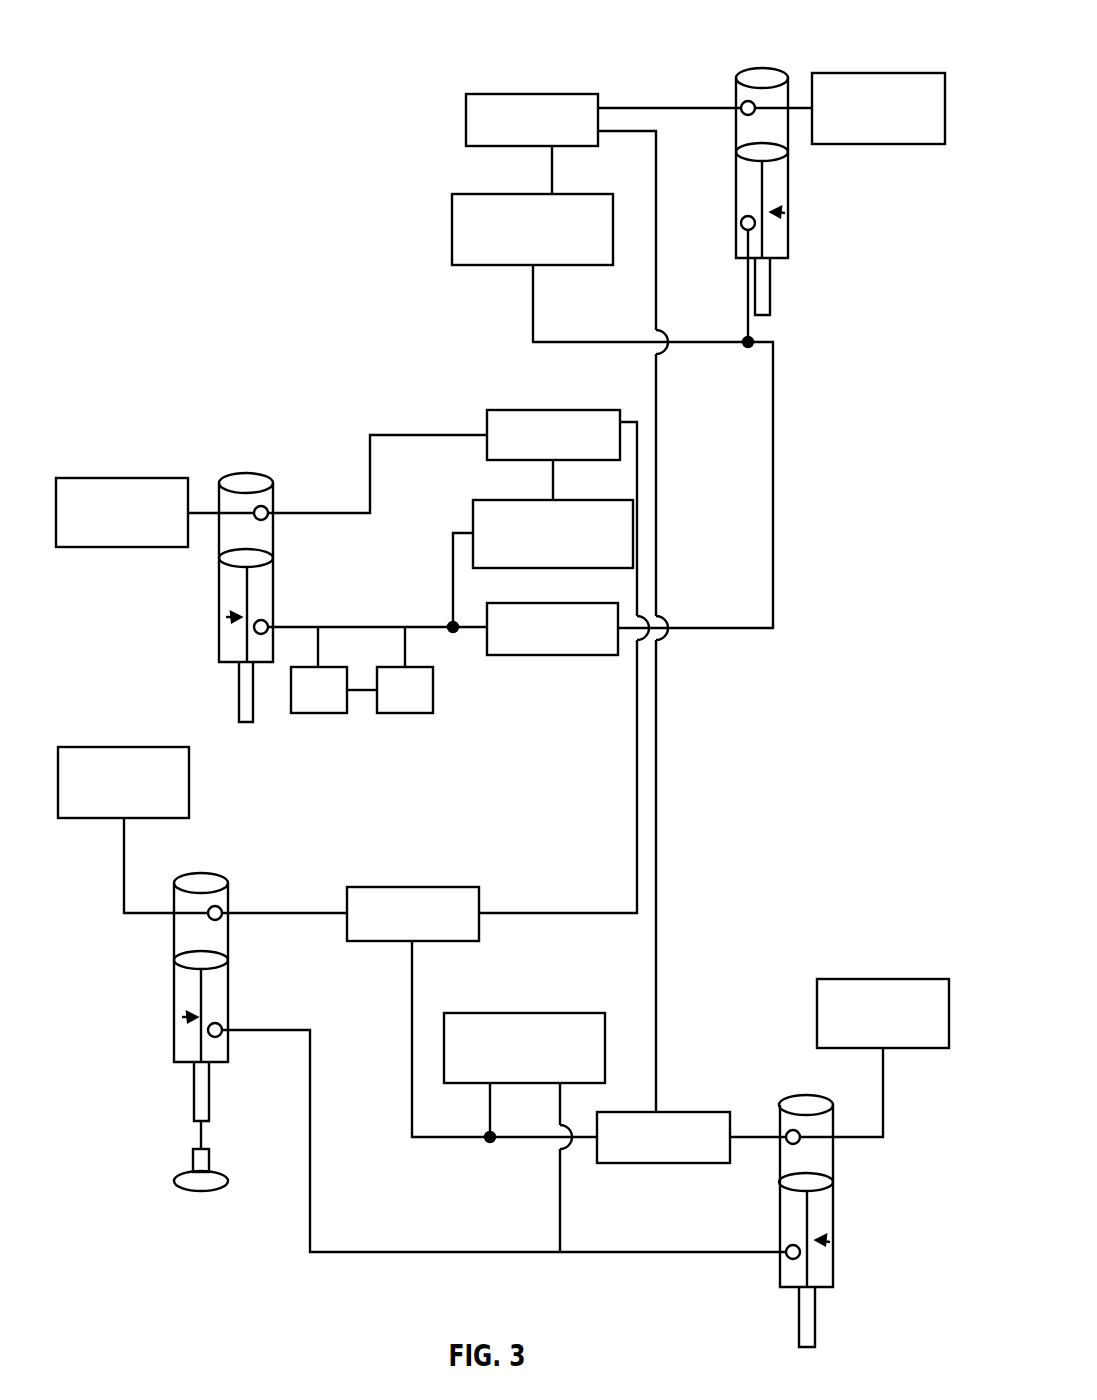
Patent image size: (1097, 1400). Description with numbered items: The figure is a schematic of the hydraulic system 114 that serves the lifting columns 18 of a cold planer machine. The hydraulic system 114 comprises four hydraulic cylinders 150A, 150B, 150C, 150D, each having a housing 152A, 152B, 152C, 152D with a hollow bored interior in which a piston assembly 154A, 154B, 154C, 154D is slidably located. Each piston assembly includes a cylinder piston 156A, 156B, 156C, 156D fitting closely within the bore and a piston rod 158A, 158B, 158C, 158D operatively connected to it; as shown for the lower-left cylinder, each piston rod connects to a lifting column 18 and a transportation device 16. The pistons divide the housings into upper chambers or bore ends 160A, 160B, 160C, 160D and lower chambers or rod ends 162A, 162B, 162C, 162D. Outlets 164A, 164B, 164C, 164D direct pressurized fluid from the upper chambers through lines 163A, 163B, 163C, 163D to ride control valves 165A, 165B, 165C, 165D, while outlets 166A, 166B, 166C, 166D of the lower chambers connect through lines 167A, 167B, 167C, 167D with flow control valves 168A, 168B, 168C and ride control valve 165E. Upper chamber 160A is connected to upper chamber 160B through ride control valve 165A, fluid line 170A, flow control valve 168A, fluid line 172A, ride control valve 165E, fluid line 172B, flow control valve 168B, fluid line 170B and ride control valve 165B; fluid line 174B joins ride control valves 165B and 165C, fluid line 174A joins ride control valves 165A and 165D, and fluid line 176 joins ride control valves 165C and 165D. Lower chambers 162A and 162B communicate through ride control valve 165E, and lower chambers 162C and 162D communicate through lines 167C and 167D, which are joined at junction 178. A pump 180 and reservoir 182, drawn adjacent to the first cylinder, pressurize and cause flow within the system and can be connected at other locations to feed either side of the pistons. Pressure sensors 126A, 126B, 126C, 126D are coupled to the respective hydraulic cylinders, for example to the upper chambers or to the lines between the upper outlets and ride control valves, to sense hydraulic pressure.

The hydraulic system 114 is at (868, 20).
The transportation device 16 is at (215, 1173).
The lifting column 18 is at (193, 1160).
The pressure sensor 126A is at (135, 477).
The pressure sensor 126B is at (848, 73).
The pressure sensor 126C is at (857, 978).
The pressure sensor 126D is at (133, 747).
The hydraulic cylinder 150A is at (246, 454).
The hydraulic cylinder 150B is at (754, 55).
The hydraulic cylinder 150C is at (789, 1070).
The hydraulic cylinder 150D is at (221, 840).
The housing 152A is at (218, 495).
The housing 152B is at (790, 82).
The housing 152C is at (833, 1112).
The housing 152D is at (174, 887).
The piston assembly 154A is at (226, 617).
The piston assembly 154B is at (785, 214).
The piston assembly 154C is at (830, 1242).
The piston assembly 154D is at (182, 1017).
The cylinder piston 156A is at (230, 567).
The cylinder piston 156B is at (778, 163).
The cylinder piston 156C is at (825, 1193).
The cylinder piston 156D is at (183, 971).
The piston rod 158A is at (238, 680).
The piston rod 158B is at (773, 277).
The piston rod 158C is at (817, 1307).
The piston rod 158D is at (191, 1084).
The upper chamber 160A is at (225, 543).
The upper chamber 160B is at (785, 138).
The upper chamber 160C is at (827, 1167).
The upper chamber 160D is at (181, 945).
The lower chamber 162A is at (253, 590).
The lower chamber 162B is at (755, 197).
The lower chamber 162C is at (800, 1238).
The lower chamber 162D is at (211, 1015).
The line 163A is at (445, 432).
The line 163B is at (627, 107).
The line 163C is at (732, 1140).
The line 163D is at (315, 919).
The outlet 164A is at (267, 507).
The outlet 164B is at (741, 101).
The outlet 164C is at (788, 1131).
The outlet 164D is at (222, 907).
The ride control valve 165A is at (585, 409).
The ride control valve 165B is at (547, 93).
The ride control valve 165C is at (627, 1164).
The ride control valve 165D is at (427, 886).
The ride control valve 165E is at (570, 656).
The outlet 166A is at (270, 618).
The outlet 166B is at (741, 230).
The outlet 166C is at (788, 1258).
The outlet 166D is at (213, 1034).
The line 167A is at (355, 626).
The line 167B is at (745, 287).
The line 167C is at (653, 1253).
The line 167D is at (353, 1253).
The flow control valve 168A is at (543, 499).
The flow control valve 168B is at (537, 193).
The flow control valve 168C is at (527, 1012).
The fluid line 170A is at (554, 470).
The fluid line 170B is at (553, 155).
The fluid line 172A is at (453, 548).
The fluid line 172B is at (637, 341).
The fluid line 174A is at (637, 688).
The fluid line 174B is at (657, 395).
The fluid line 176 is at (535, 1140).
The junction 178 is at (558, 1246).
The pump 180 is at (300, 706).
The reservoir 182 is at (386, 706).